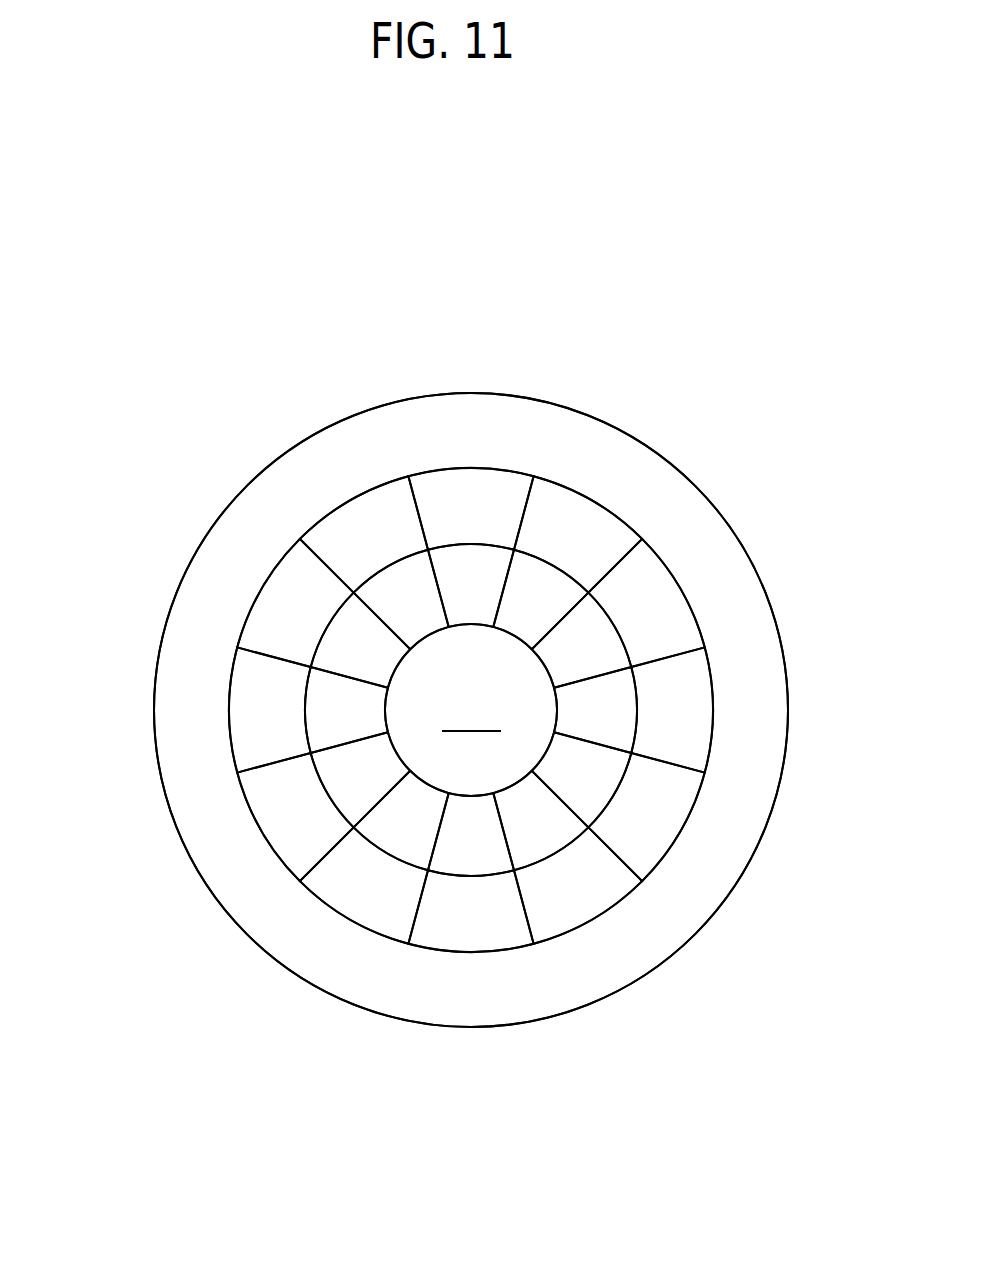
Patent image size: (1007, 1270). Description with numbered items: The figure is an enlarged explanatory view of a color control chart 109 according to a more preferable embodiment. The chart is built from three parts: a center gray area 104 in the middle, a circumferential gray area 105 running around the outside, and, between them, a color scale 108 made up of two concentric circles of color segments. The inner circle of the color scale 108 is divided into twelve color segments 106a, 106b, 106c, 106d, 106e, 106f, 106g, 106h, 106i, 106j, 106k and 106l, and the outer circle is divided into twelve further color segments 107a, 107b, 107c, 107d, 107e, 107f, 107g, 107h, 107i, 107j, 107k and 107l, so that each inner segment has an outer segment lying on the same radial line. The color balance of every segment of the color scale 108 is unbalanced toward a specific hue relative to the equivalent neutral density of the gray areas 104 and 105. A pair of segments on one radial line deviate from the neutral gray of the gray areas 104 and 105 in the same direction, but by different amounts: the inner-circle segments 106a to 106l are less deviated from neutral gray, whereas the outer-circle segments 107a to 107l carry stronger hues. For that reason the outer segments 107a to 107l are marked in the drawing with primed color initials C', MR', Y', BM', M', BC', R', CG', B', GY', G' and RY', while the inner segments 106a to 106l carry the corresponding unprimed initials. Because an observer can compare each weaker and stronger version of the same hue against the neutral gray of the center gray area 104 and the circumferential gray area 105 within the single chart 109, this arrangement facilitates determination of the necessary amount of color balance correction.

The center gray area 104 is at (471, 710).
The circumferential gray area 105 is at (617, 455).
The color segment 106a is at (620, 655).
The color segment 106b is at (575, 590).
The color segment 106c is at (443, 557).
The color segment 106d is at (362, 593).
The color segment 106e is at (317, 658).
The color segment 106f is at (313, 738).
The color segment 106g is at (343, 823).
The color segment 106h is at (417, 860).
The color segment 106i is at (505, 870).
The color segment 106j is at (570, 830).
The color segment 106k is at (618, 762).
The color segment 106l is at (625, 742).
The color segment 107a is at (653, 563).
The color segment 107b is at (550, 486).
The color segment 107c is at (495, 477).
The color segment 107d is at (375, 502).
The color segment 107e is at (292, 562).
The color segment 107f is at (235, 672).
The color segment 107g is at (253, 795).
The color segment 107h is at (325, 887).
The color segment 107i is at (432, 943).
The color segment 107j is at (570, 922).
The color segment 107k is at (662, 843).
The color segment 107l is at (712, 692).
The color scale 108 is at (393, 465).
The color control chart 109 is at (455, 382).